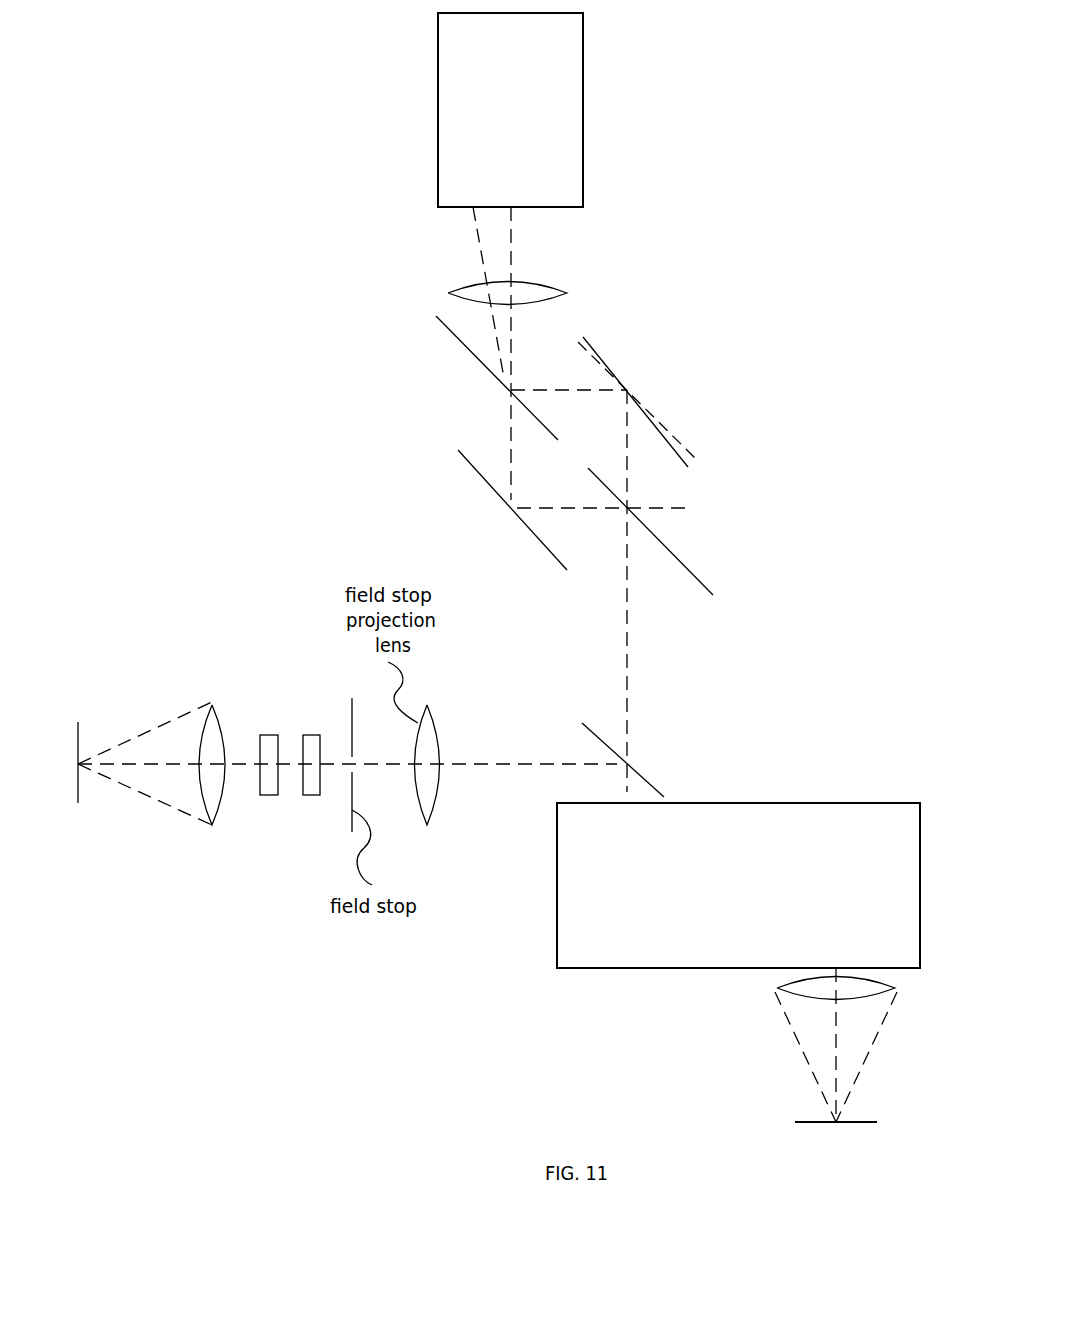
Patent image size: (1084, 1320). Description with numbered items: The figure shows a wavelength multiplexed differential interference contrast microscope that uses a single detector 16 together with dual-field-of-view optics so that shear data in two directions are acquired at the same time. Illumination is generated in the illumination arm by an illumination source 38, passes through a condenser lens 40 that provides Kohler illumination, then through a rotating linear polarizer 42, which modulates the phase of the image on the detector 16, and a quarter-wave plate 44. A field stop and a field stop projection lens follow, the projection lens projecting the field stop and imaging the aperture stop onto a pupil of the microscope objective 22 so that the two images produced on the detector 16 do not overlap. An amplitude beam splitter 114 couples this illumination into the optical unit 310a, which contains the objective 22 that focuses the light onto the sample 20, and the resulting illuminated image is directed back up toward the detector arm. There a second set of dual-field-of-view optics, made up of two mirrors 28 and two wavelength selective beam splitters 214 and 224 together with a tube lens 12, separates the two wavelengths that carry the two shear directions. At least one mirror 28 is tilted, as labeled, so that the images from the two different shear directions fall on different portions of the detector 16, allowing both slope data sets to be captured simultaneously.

The detector 16 is at (583, 103).
The tube lens 12 is at (558, 300).
The wavelength selective beam splitter 214 is at (472, 355).
The mirror 28 is at (680, 440).
The beam splitter 224 is at (702, 580).
The illumination source 38 is at (78, 805).
The condenser lens 40 is at (222, 803).
The rotating linear polarizer 42 is at (264, 735).
The quarter-wave plate 44 is at (310, 735).
The amplitude beam splitter 114 is at (590, 733).
The optical unit 310a is at (784, 803).
The microscope objective 22 is at (892, 990).
The sample 20 is at (857, 1120).